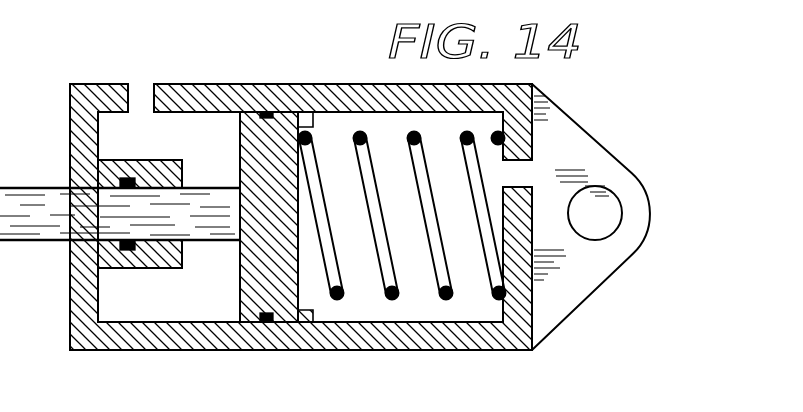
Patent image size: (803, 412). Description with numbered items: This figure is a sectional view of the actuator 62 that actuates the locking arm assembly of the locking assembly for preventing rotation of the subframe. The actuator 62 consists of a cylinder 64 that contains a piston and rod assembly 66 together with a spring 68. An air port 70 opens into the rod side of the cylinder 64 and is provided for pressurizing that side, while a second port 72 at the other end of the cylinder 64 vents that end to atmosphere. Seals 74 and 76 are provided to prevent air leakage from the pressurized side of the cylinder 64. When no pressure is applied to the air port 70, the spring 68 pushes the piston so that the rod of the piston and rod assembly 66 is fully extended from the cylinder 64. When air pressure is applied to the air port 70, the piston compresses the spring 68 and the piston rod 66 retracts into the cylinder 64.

The actuator 62 is at (629, 152).
The cylinder 64 is at (360, 84).
The piston and rod assembly 66 is at (25, 242).
The spring 68 is at (397, 297).
The air port 70 is at (133, 101).
The second port 72 is at (527, 182).
The seal 74 is at (127, 248).
The seal 76 is at (262, 350).